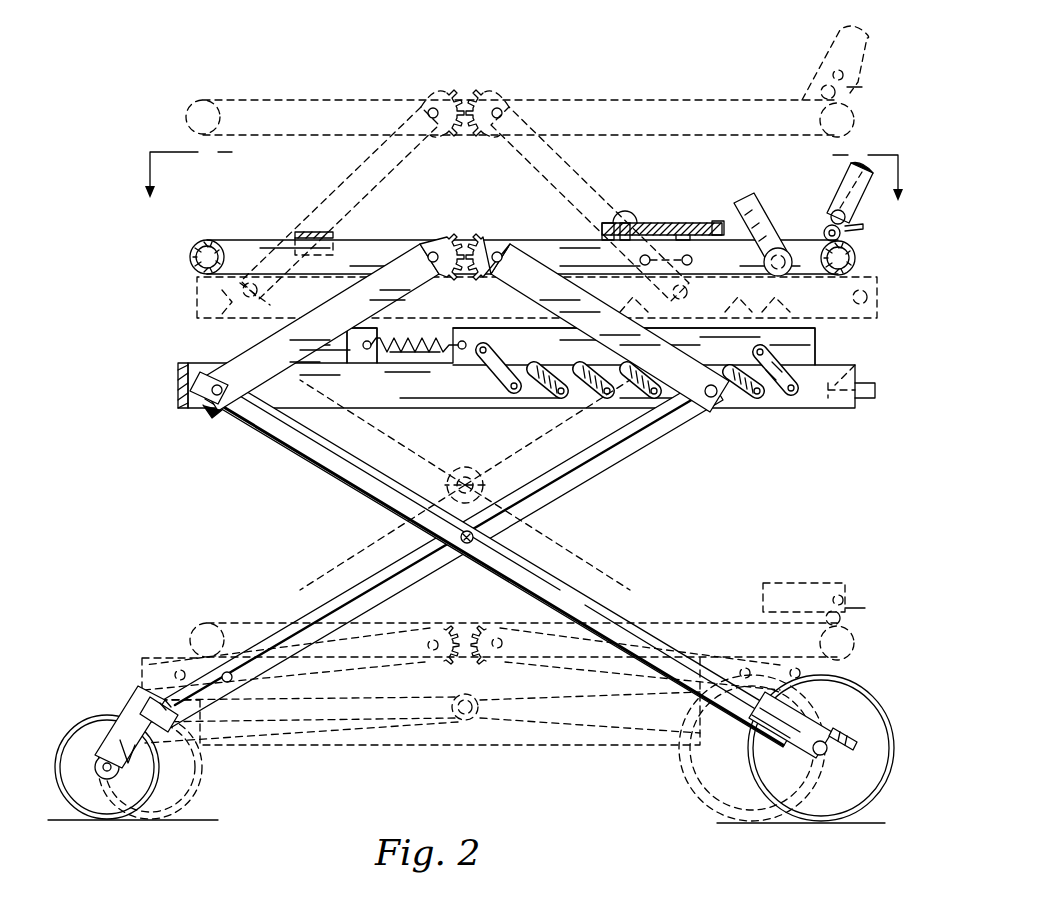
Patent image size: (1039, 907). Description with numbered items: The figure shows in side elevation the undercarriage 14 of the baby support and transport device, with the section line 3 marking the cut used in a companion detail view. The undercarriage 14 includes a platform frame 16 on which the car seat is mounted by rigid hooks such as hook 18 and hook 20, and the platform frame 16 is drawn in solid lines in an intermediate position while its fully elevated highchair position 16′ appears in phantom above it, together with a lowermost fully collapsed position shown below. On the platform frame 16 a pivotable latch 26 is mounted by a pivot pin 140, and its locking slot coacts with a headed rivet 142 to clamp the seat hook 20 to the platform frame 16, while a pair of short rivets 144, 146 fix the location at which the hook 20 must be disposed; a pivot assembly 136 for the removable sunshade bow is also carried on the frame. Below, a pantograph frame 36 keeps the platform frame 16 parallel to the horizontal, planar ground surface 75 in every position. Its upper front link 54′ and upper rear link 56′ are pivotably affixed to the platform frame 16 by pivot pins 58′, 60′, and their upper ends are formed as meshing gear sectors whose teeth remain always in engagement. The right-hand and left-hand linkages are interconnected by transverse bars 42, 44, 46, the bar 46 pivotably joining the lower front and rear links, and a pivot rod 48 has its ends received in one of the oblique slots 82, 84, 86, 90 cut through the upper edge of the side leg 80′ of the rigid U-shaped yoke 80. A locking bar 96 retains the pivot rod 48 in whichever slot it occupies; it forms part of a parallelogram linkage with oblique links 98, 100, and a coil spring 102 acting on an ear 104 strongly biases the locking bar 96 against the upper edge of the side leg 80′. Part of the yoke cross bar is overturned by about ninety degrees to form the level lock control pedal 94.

The undercarriage 14 is at (176, 84).
The platform frame 16 is at (192, 257).
The raised highchair position of platform frame 16′ is at (333, 98).
The rigid hook 18 is at (320, 232).
The rigid hook 20 is at (698, 222).
The pivotable latch 26 is at (683, 233).
The pantograph frame 36 is at (188, 573).
The transverse bar 42 is at (232, 687).
The transverse bar 44 is at (210, 396).
The transverse bar 46 is at (467, 545).
The pivot rod 48 is at (711, 397).
The upper front link 54′ is at (263, 356).
The upper rear link 56′ is at (680, 349).
The pivot pin 58′ is at (434, 264).
The pivot pin 60′ is at (498, 264).
The ground surface 75 is at (177, 823).
The yoke 80 is at (178, 386).
The side leg of yoke 80′ is at (320, 400).
The oblique slot 82 is at (560, 395).
The oblique slot 84 is at (608, 395).
The oblique slot 86 is at (655, 395).
The oblique slot 90 is at (758, 396).
The level lock control pedal 94 is at (870, 385).
The locking bar 96 is at (570, 352).
The oblique link 98 is at (513, 377).
The oblique link 100 is at (790, 392).
The coil spring 102 is at (405, 352).
The ear 104 is at (343, 347).
The pivot assembly 136 is at (789, 208).
The pivot pin 140 is at (737, 200).
The headed rivet 142 is at (628, 216).
The short rivet 144 is at (640, 260).
The short rivet 146 is at (692, 260).
The section line 3- 3 is at (523, 187).